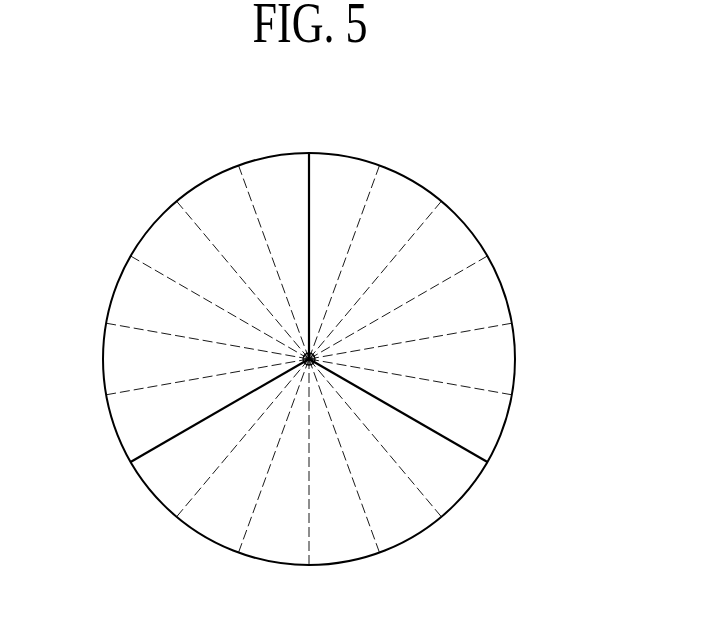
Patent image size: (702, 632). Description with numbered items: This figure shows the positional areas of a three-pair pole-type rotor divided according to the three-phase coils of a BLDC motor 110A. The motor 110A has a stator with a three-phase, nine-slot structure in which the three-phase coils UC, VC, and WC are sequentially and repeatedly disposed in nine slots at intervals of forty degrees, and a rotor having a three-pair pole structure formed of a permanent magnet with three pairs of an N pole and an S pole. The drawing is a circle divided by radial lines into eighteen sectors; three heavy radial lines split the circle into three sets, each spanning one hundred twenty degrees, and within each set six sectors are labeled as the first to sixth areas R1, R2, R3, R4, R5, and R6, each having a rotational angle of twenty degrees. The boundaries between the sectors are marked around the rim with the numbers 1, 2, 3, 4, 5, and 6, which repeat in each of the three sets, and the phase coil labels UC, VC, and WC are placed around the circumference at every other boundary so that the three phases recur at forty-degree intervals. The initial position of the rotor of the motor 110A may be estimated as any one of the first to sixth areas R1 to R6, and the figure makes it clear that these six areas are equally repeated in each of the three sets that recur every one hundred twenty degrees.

The BLDC motor 110A is at (160, 112).
The slot number 1 is at (309, 303).
The slot number 2 is at (271, 339).
The slot number 3 is at (271, 378).
The slot number 4 is at (309, 414).
The slot number 5 is at (347, 378).
The slot number 6 is at (347, 339).
The first area R1 is at (293, 330).
The second area R2 is at (265, 359).
The third area R3 is at (293, 389).
The fourth area R4 is at (323, 389).
The fifth area R5 is at (351, 359).
The sixth area R6 is at (323, 330).
The U-phase coil UC is at (308, 295).
The V-phase coil VC is at (265, 382).
The W-phase coil WC is at (352, 382).